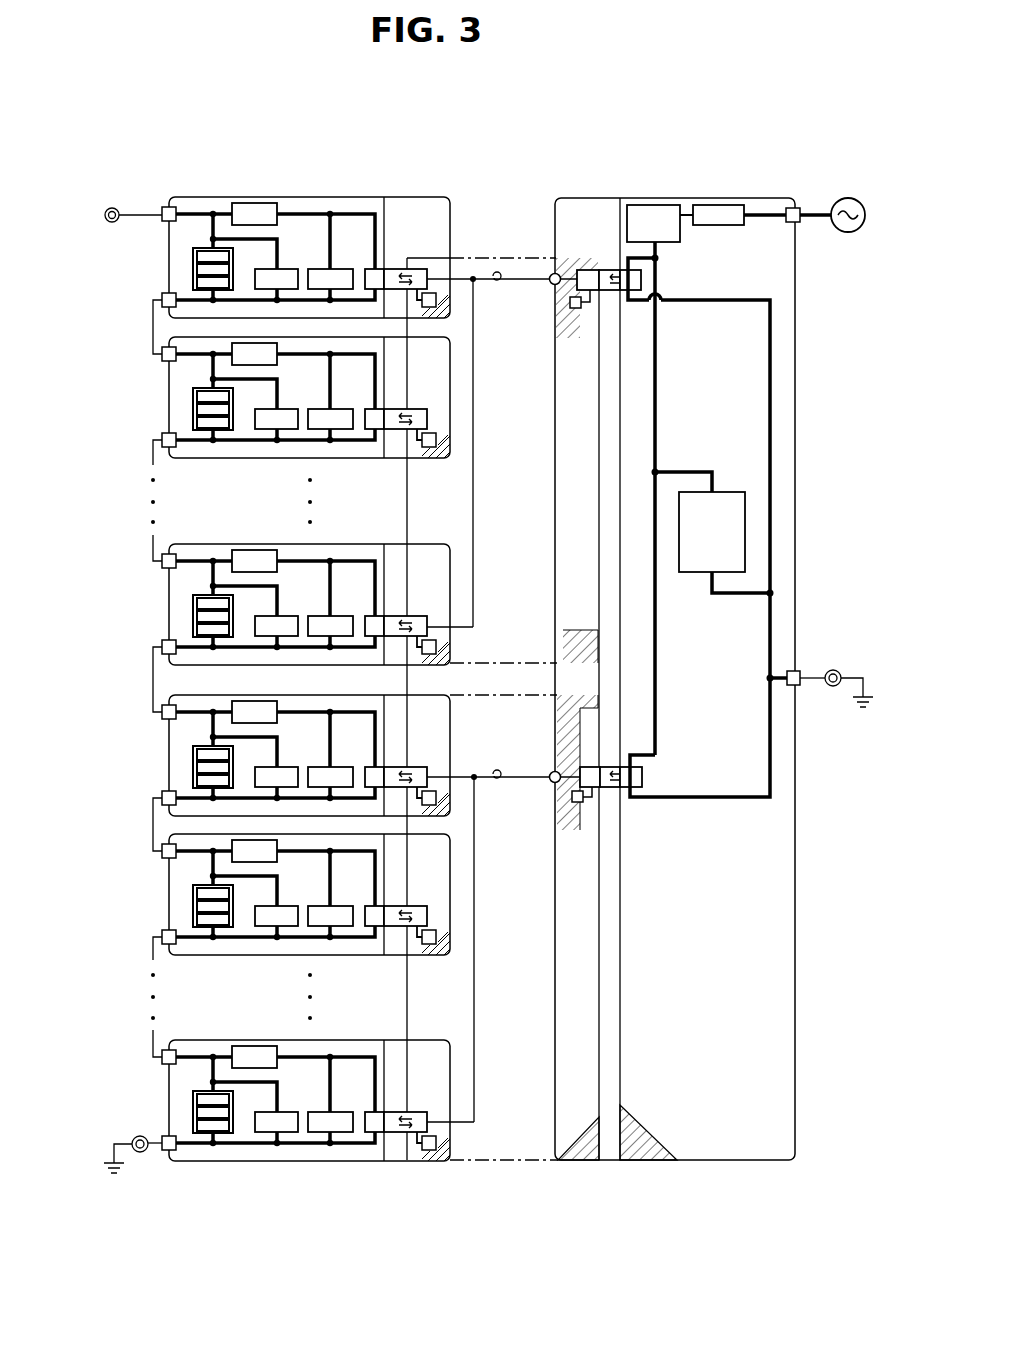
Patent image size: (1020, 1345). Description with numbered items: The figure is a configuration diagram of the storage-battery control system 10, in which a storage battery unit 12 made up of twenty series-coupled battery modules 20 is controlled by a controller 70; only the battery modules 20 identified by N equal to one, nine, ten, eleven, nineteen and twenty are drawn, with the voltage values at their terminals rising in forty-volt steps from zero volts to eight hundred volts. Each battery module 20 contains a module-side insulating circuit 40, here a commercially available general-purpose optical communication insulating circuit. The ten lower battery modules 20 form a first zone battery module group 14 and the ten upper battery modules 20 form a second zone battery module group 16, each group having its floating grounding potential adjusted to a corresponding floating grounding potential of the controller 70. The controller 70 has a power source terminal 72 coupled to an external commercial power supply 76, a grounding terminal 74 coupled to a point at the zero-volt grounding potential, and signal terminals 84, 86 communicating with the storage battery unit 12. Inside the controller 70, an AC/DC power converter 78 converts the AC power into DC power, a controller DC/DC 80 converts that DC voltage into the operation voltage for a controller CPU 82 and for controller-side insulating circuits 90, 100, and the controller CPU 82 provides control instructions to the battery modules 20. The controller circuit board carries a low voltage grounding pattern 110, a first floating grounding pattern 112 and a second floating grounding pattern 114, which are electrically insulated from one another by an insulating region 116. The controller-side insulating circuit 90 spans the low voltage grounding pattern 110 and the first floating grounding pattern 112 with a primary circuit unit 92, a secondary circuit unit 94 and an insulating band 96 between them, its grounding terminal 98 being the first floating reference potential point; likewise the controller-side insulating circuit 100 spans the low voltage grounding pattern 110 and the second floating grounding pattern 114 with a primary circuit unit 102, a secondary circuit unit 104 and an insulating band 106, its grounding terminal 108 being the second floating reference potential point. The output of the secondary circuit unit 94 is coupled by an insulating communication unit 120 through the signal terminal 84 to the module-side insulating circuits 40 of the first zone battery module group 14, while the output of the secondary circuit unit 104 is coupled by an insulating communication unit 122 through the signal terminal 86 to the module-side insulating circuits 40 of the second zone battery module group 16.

The storage-battery control system 10 is at (592, 137).
The storage battery unit 12 is at (491, 164).
The first zone battery module group 14 is at (100, 700).
The second zone battery module group 16 is at (100, 200).
The battery module 20 is at (340, 197).
The module-side insulating circuit 40 is at (406, 263).
The controller 70 is at (588, 198).
The power source terminal 72 is at (793, 208).
The grounding terminal 74 is at (795, 672).
The external commercial power supply 76 is at (848, 198).
The AC/DC power converter 78 is at (730, 226).
The controller DC/DC 80 is at (665, 243).
The controller CPU 82 is at (724, 492).
The signal terminal 84 is at (552, 775).
The signal terminal 86 is at (550, 282).
The controller-side insulating circuit 90 is at (662, 716).
The primary circuit unit 92 is at (627, 767).
The secondary circuit unit 94 is at (589, 767).
The insulating band 96 is at (610, 767).
The grounding terminal 98 is at (558, 812).
The controller-side insulating circuit 100 is at (712, 366).
The primary circuit unit 102 is at (631, 292).
The secondary circuit unit 104 is at (589, 294).
The insulating band 106 is at (608, 292).
The grounding terminal 108 is at (570, 306).
The low voltage grounding pattern 110 is at (652, 1160).
The first floating grounding pattern 112 is at (570, 1192).
The second floating grounding pattern 114 is at (560, 265).
The insulating region 116 is at (570, 682).
The insulating communication unit 120 is at (497, 786).
The insulating communication unit 122 is at (497, 288).